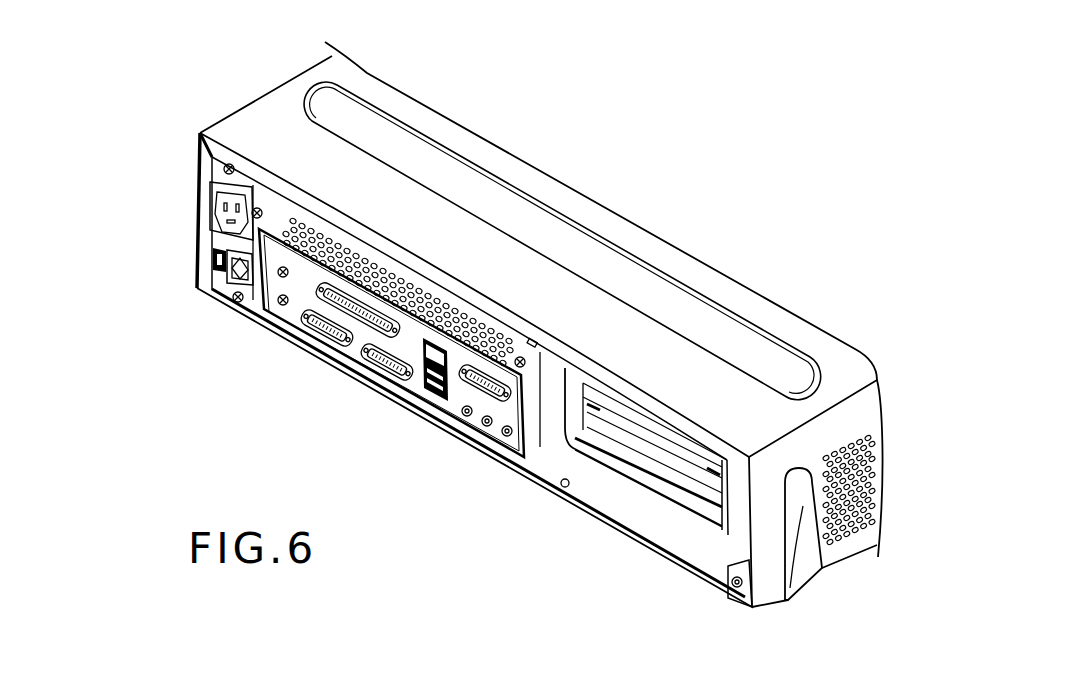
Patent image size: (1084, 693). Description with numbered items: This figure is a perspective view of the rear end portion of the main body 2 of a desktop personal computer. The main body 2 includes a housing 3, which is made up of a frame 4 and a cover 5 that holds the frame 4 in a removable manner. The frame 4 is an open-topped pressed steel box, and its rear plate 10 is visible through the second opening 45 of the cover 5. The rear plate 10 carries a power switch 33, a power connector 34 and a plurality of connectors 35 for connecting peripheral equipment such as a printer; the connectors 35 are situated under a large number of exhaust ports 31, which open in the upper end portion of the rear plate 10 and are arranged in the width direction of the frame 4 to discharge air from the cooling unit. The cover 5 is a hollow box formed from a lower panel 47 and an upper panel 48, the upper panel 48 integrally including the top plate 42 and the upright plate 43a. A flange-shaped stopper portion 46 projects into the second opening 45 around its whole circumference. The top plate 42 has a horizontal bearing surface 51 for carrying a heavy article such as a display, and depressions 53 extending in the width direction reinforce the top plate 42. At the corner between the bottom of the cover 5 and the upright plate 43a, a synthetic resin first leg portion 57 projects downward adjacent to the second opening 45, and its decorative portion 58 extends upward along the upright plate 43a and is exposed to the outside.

The main body 2 is at (640, 232).
The housing 3 is at (580, 557).
The frame 4 is at (643, 510).
The cover 5 is at (773, 513).
The rear plate 10 is at (542, 448).
The exhaust ports 31 is at (383, 257).
The power switch 33 is at (223, 290).
The power connector 34 is at (230, 200).
The connectors 35 is at (427, 352).
The top plate 42 is at (727, 298).
The upright plate 43a is at (860, 415).
The second opening 45 is at (562, 485).
The stopper portion 46 is at (200, 235).
The lower panel 47 is at (393, 400).
The upper panel 48 is at (251, 118).
The bearing surface 51 is at (447, 227).
The depressions 53 is at (377, 120).
The first leg portions 57 is at (802, 592).
The decorative portions 58 is at (781, 570).